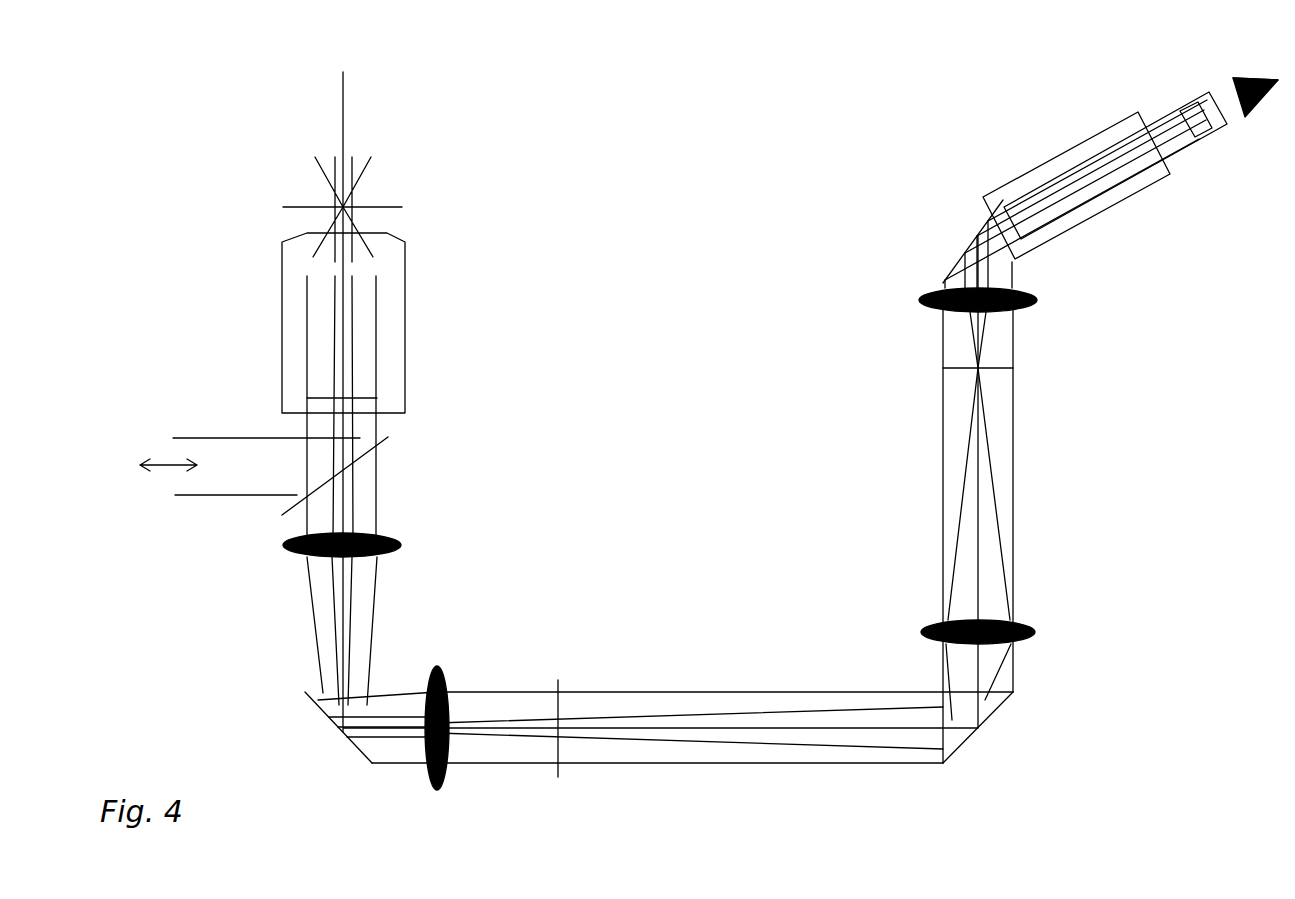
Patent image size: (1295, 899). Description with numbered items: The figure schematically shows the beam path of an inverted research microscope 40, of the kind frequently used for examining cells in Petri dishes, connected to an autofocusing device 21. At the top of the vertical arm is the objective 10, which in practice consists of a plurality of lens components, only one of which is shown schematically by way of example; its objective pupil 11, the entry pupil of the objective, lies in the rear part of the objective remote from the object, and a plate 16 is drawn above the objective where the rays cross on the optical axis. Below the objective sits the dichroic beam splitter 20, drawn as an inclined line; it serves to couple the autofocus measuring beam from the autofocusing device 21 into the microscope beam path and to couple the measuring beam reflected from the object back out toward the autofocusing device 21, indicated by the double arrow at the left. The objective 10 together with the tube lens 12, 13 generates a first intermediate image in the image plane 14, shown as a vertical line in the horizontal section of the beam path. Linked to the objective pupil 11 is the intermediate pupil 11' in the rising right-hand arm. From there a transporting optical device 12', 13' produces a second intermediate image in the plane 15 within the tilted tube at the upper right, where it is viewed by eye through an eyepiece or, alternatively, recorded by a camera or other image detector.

The objective 10 is at (282, 300).
The objective pupil 11 is at (276, 380).
The tube lens 12 is at (378, 544).
The tube lens 13 is at (459, 750).
The image plane 14 is at (563, 750).
The plane 15 is at (1188, 90).
The aperture plate 16 is at (388, 207).
The dichroic beam splitter 20 is at (387, 450).
The autofocusing device 21 is at (141, 469).
The inverted microscope 40 is at (671, 192).
The intermediate pupil 11' is at (1019, 379).
The transporting optical device 12' is at (929, 308).
The transporting optical device 13' is at (1014, 626).